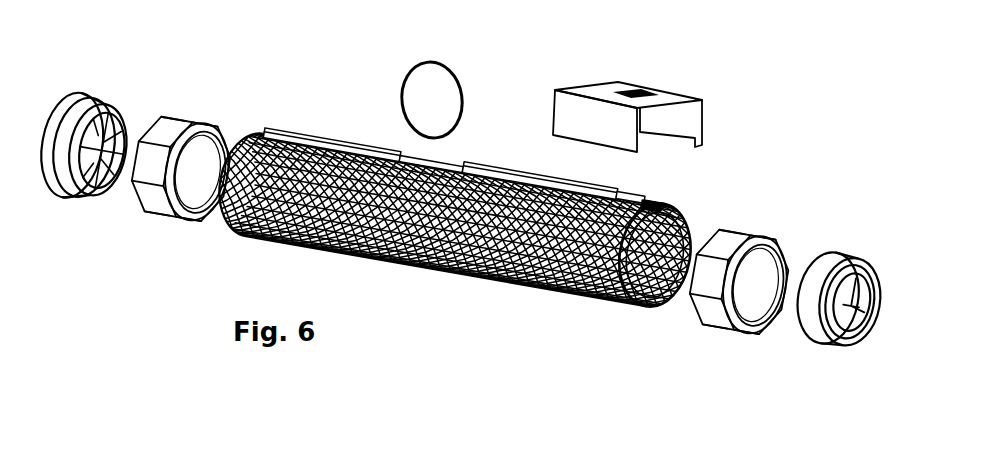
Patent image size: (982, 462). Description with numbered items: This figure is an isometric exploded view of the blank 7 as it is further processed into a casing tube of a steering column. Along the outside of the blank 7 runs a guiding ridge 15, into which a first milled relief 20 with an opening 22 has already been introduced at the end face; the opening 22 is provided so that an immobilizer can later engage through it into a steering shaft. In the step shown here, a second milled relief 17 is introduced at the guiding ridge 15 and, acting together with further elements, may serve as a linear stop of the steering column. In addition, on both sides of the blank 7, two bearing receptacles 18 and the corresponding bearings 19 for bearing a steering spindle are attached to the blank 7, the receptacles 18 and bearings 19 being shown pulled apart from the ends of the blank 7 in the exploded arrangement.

The blank 7 is at (460, 273).
The guiding ridge 15 is at (619, 186).
The second milled relief 17 is at (423, 170).
The bearing receptacle 18 is at (163, 215).
The bearing 19 is at (67, 195).
The first milled relief 20 is at (633, 192).
The opening 22 is at (663, 204).